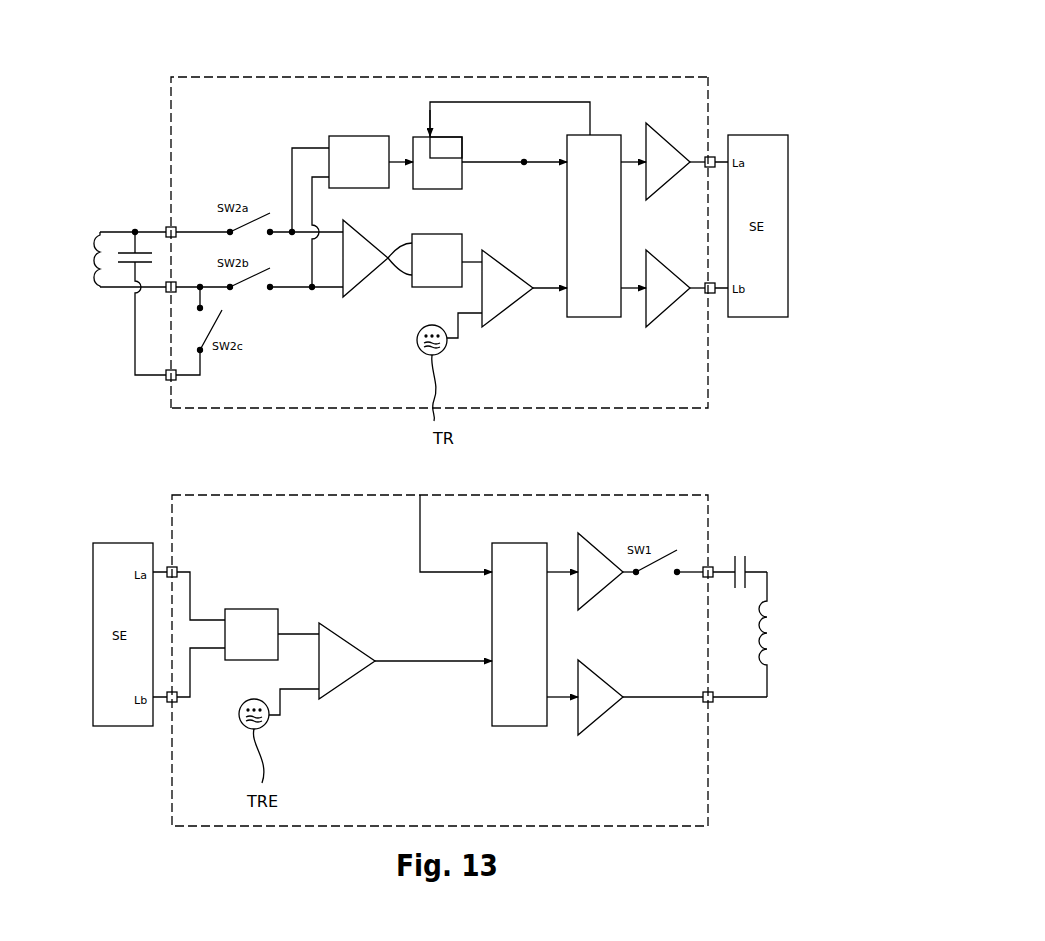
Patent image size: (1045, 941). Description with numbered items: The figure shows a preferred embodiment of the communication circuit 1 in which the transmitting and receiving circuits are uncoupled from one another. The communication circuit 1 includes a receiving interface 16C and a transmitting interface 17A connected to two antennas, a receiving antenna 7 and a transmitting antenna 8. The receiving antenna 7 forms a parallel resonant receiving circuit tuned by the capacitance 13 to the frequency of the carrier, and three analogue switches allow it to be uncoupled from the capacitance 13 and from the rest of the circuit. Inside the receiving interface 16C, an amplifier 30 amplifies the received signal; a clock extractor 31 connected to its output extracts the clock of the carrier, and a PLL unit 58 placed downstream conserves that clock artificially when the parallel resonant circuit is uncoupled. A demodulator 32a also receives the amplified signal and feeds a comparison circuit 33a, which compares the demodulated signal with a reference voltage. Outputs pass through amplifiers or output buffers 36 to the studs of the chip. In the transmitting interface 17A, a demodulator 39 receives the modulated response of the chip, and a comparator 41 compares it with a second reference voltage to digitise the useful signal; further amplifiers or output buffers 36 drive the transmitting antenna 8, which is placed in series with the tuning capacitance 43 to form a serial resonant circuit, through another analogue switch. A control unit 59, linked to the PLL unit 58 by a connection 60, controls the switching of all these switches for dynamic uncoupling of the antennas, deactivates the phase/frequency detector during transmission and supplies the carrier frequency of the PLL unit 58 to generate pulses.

The communication circuit 1 is at (132, 78).
The receiving antenna 7 is at (88, 242).
The tuning capacitance 13 is at (127, 268).
The clock extractor 31 is at (343, 136).
The PLL unit 58 is at (434, 190).
The connection 60 is at (524, 158).
The amplifier 30 is at (372, 295).
The demodulator 32a is at (422, 280).
The comparison circuit 33a is at (513, 302).
The control unit 59 is at (590, 307).
The amplifier or output buffer 36 is at (666, 173).
The receiving interface 16C is at (716, 378).
The transmitting interface 17A is at (715, 520).
The demodulator 39 is at (256, 608).
The comparator 41 is at (347, 643).
The tuning capacitance 43 is at (748, 546).
The transmitting antenna 8 is at (774, 600).